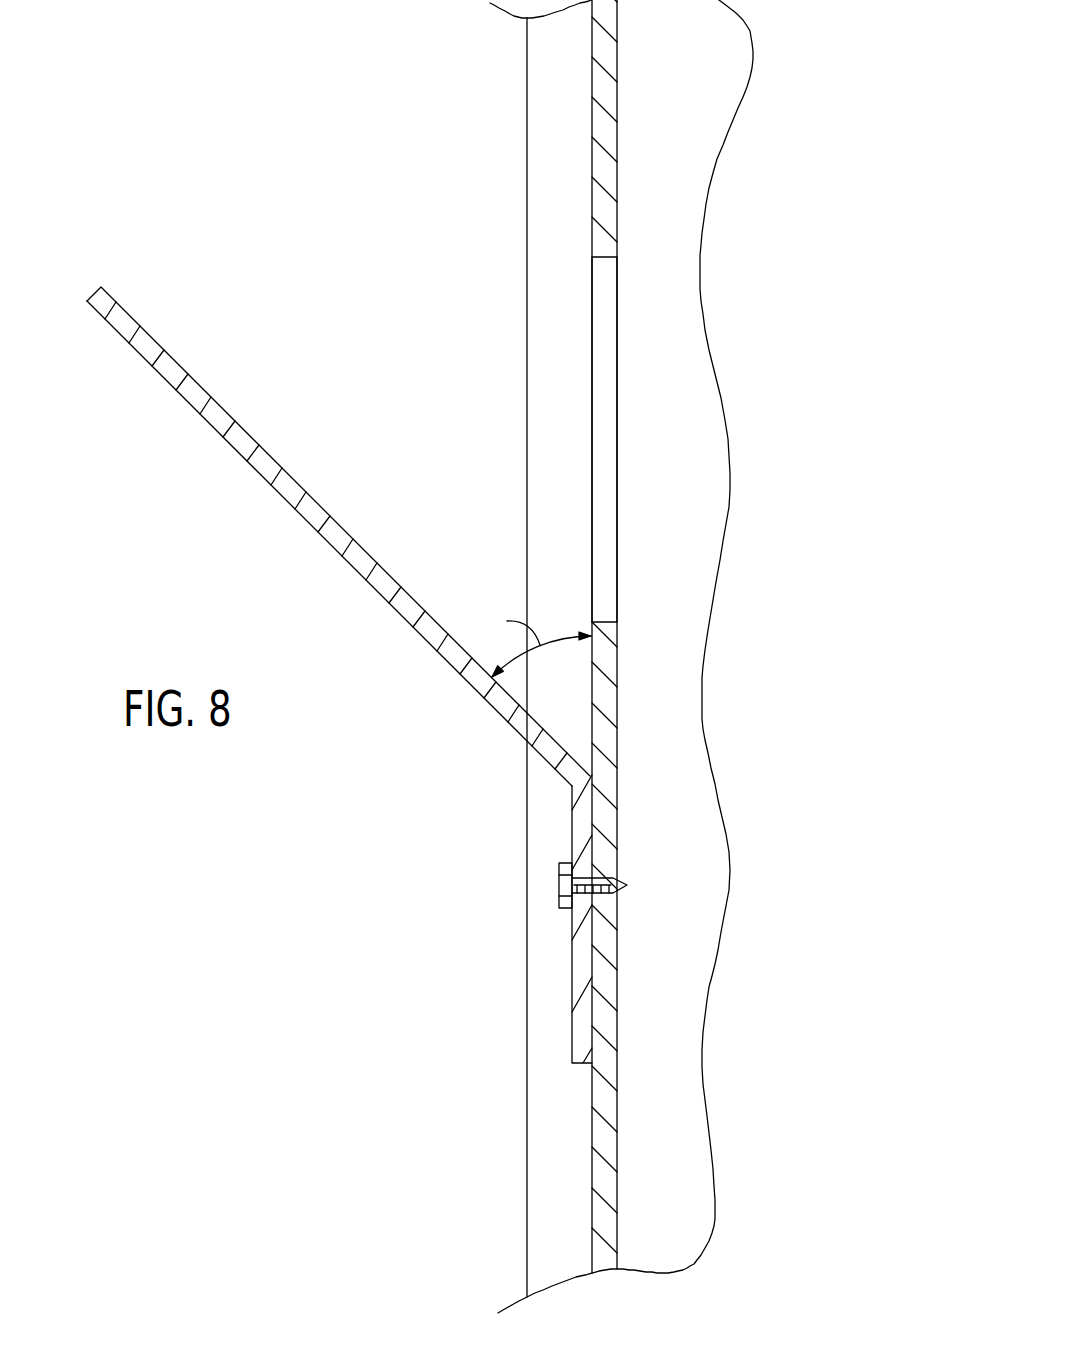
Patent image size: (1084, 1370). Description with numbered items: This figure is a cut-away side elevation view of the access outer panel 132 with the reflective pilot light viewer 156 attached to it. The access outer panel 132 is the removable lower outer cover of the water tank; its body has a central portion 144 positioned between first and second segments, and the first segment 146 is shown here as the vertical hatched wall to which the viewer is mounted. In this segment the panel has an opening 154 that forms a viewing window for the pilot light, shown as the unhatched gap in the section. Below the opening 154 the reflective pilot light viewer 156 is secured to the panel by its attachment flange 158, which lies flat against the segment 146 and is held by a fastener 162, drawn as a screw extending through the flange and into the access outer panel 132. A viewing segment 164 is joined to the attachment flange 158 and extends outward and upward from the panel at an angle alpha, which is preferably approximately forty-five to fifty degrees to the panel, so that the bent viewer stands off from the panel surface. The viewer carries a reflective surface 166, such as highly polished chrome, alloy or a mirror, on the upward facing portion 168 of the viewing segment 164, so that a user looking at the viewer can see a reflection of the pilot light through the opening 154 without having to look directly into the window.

The access outer panel 132 is at (510, 1023).
The central portion 144 is at (557, 155).
The first segment 146 is at (610, 1062).
The opening 154 is at (603, 378).
The reflective pilot light viewer 156 is at (342, 632).
The attachment flange 158 is at (580, 962).
The second fastener 162 is at (557, 883).
The viewing segment 164 is at (311, 531).
The reflective surface 166 is at (345, 463).
The upward facing portion 168 is at (147, 328).